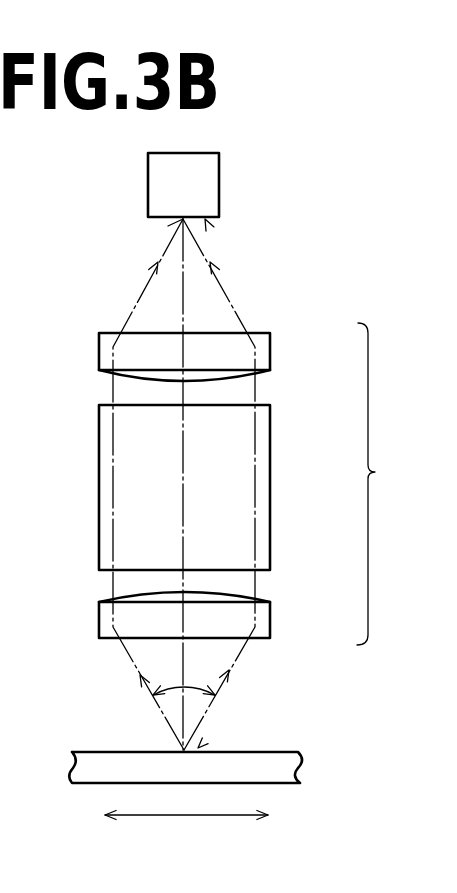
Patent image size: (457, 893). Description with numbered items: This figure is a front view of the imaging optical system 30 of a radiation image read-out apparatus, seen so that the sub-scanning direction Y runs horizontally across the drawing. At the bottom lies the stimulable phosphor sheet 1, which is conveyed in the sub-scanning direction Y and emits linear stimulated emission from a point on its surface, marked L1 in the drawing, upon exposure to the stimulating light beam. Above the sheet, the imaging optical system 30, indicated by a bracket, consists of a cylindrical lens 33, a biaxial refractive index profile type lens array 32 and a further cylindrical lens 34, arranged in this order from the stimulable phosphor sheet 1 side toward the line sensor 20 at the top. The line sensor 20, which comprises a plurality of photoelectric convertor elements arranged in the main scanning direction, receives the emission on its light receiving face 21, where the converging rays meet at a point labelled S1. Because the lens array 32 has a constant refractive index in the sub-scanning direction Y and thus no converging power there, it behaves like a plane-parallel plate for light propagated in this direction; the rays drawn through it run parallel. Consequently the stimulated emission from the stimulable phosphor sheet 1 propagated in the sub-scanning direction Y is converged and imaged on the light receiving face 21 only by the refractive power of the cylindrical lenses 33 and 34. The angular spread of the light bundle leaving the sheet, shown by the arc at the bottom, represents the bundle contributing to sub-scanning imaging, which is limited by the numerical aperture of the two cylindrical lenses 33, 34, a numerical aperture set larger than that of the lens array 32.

The line sensor 20 is at (219, 170).
The light receiving face 21 is at (205, 219).
The light receiving point S1 is at (168, 226).
The imaging optical system 30 is at (262, 484).
The cylindrical lens 34 is at (270, 348).
The biaxial refractive index profile type lens array 32 is at (270, 475).
The cylindrical lens 33 is at (270, 620).
The measurement point L1 is at (198, 748).
The stimulable phosphor sheet 1 is at (290, 773).
The sub-scanning direction Y is at (186, 833).